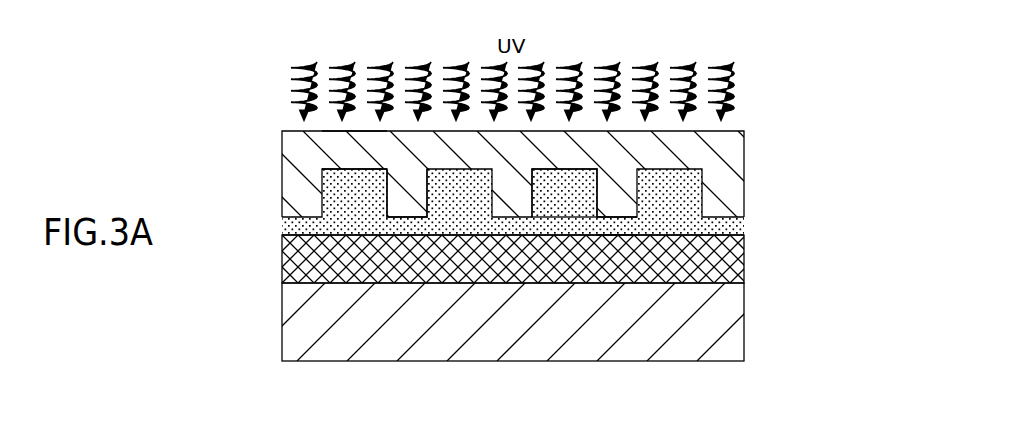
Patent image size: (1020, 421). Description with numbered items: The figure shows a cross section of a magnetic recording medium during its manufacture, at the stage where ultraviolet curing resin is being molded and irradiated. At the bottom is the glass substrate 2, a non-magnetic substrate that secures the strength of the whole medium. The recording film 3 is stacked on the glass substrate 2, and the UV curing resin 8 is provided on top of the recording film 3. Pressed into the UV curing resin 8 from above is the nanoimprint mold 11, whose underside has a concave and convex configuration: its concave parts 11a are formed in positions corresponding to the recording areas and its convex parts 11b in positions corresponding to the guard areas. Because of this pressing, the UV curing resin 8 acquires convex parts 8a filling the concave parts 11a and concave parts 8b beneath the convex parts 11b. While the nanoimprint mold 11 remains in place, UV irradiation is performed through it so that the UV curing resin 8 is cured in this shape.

The glass substrate 2 is at (738, 322).
The recording film 3 is at (277, 237).
The UV curing resin 8 is at (694, 195).
The convex parts 8a is at (573, 183).
The concave parts 8b is at (605, 216).
The nanoimprint mold 11 is at (733, 143).
The concave parts 11a is at (350, 169).
The convex parts 11b is at (402, 201).